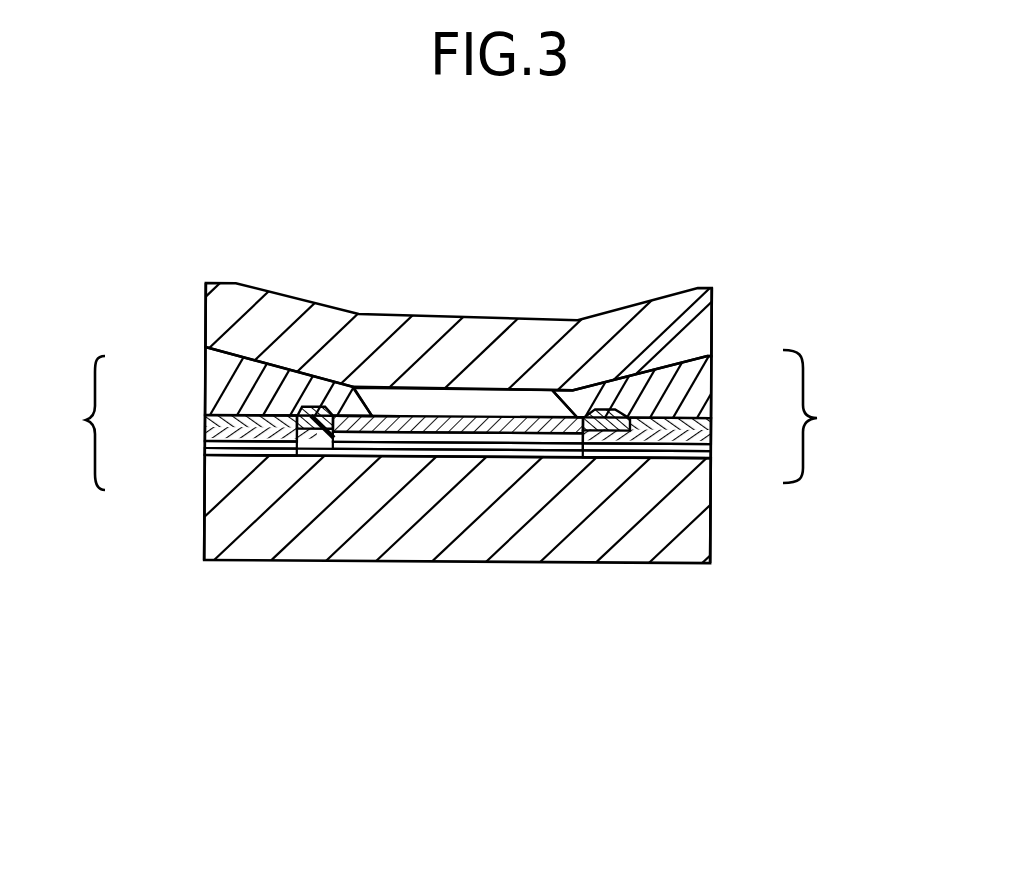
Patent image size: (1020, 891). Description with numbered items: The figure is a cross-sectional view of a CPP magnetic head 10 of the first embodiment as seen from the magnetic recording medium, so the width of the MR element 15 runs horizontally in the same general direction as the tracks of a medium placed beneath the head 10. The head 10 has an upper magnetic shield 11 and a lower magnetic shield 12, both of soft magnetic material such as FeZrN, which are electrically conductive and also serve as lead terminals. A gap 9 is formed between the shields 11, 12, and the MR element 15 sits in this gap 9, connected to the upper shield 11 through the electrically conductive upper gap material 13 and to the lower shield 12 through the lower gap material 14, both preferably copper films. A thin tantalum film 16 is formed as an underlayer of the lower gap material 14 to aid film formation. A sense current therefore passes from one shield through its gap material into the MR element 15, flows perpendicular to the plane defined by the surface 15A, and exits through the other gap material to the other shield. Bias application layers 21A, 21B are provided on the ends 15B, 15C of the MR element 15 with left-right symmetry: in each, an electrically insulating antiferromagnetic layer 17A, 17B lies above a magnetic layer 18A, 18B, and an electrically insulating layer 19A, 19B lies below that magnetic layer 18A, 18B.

The gap 9 is at (487, 402).
The CPP magnetic head 10 is at (468, 285).
The upper magnetic shield 11 is at (703, 302).
The lower magnetic shield 12 is at (648, 542).
The upper gap material 13 is at (435, 406).
The lower gap material 14 is at (538, 445).
The MR element 15 is at (395, 432).
The surface of the MR element 15A is at (372, 415).
The end of the MR element 15B is at (328, 422).
The end of the MR element 15C is at (560, 413).
The tantalum film 16 is at (712, 458).
The electrically insulating antiferromagnetic layer 17A is at (703, 372).
The electrically insulating antiferromagnetic layer 17B is at (218, 370).
The magnetic layer 18A is at (712, 425).
The magnetic layer 18B is at (205, 421).
The electrically insulating layer 19A is at (712, 443).
The electrically insulating layer 19B is at (207, 447).
The bias application layer 21A is at (828, 416).
The bias application layer 21B is at (69, 423).